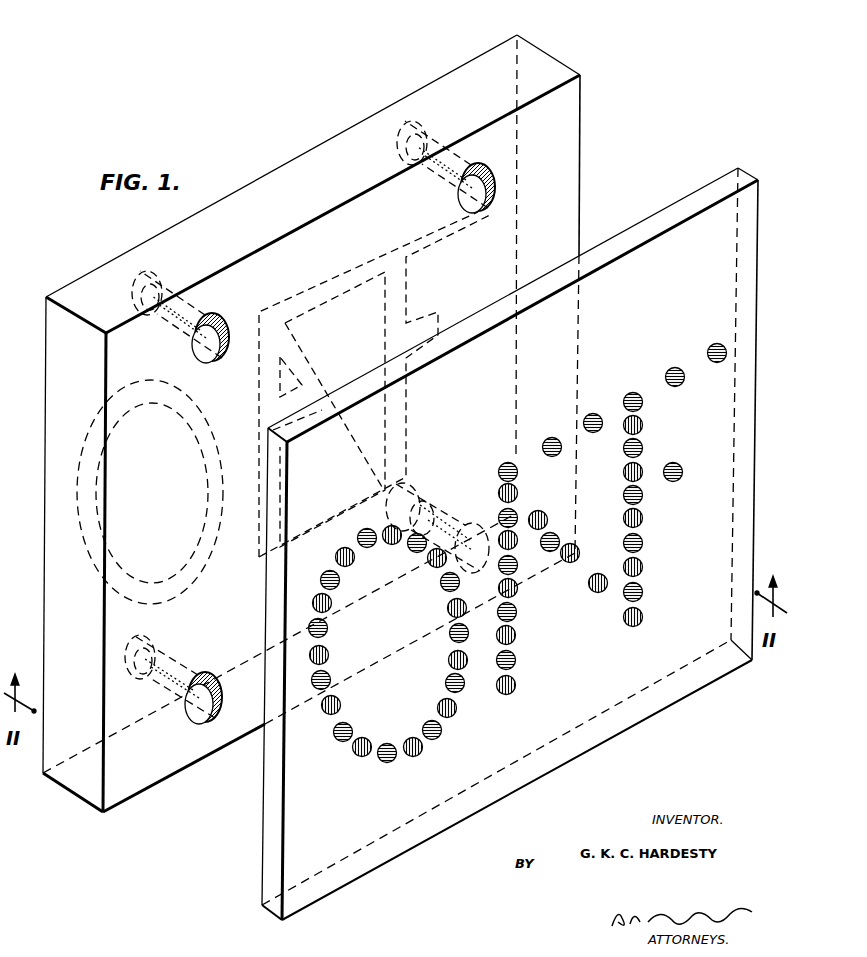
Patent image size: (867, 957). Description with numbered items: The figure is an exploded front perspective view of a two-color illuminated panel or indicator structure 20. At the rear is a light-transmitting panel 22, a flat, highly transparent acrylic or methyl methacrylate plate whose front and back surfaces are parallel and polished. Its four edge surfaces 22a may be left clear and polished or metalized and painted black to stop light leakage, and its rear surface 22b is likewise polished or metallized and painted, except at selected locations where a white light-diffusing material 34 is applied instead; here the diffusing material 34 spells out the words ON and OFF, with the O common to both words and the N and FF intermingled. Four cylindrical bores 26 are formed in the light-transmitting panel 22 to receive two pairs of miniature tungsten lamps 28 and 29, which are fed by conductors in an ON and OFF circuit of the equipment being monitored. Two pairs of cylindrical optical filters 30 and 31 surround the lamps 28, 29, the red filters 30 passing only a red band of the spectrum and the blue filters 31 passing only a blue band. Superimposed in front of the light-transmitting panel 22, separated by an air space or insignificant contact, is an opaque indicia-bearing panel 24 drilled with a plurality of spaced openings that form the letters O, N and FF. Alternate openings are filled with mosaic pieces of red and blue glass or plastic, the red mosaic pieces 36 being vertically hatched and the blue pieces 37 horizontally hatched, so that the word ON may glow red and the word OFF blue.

The two-color panel or indicator structure 20 is at (653, 126).
The light-transmitting panel 22 is at (468, 283).
The edge surfaces 22a is at (49, 299).
The rear surface 22b is at (300, 158).
The indicia-bearing panel 24 is at (706, 203).
The cylindrical bores 26 is at (216, 356).
The miniature tungsten lamps 28 is at (168, 275).
The miniature tungsten lamps 29 is at (427, 128).
The red optical filters 30 is at (213, 321).
The blue optical filters 31 is at (472, 176).
The light-diffusing material 34 is at (380, 253).
The red mosaic pieces 36 is at (341, 549).
The blue mosaic pieces 37 is at (366, 529).